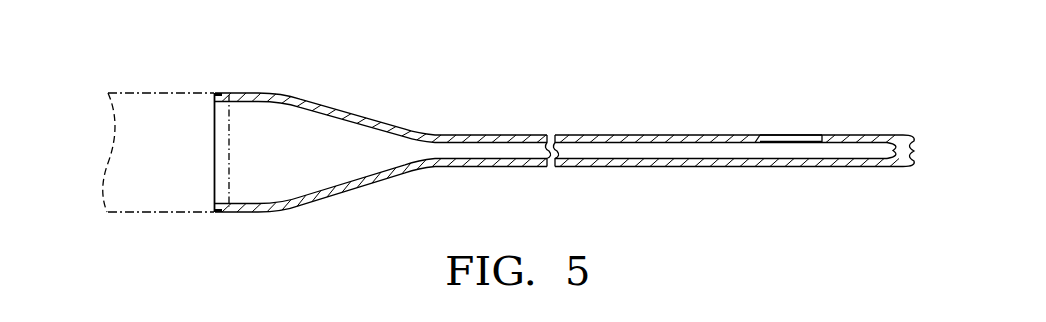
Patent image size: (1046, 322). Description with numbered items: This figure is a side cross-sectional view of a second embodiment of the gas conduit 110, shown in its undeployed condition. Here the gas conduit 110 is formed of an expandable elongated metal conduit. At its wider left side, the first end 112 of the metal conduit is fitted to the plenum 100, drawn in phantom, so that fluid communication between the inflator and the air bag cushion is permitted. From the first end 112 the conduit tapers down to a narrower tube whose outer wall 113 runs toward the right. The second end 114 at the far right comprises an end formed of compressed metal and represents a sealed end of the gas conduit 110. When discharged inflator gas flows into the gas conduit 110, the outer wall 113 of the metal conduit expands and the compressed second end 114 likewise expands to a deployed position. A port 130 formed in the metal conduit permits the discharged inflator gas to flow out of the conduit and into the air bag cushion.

The plenum 100 is at (170, 212).
The gas conduit 110 is at (491, 66).
The first end 112 is at (233, 95).
The outer wall 113 is at (708, 136).
The second end 114 is at (913, 147).
The port 130 is at (797, 136).